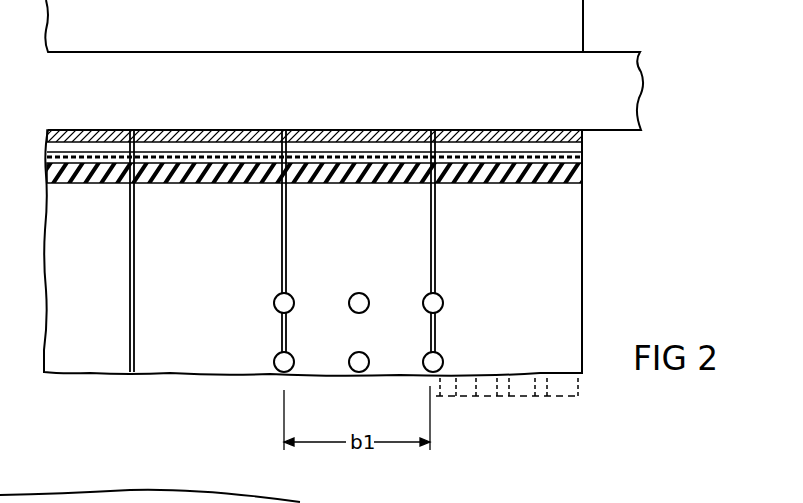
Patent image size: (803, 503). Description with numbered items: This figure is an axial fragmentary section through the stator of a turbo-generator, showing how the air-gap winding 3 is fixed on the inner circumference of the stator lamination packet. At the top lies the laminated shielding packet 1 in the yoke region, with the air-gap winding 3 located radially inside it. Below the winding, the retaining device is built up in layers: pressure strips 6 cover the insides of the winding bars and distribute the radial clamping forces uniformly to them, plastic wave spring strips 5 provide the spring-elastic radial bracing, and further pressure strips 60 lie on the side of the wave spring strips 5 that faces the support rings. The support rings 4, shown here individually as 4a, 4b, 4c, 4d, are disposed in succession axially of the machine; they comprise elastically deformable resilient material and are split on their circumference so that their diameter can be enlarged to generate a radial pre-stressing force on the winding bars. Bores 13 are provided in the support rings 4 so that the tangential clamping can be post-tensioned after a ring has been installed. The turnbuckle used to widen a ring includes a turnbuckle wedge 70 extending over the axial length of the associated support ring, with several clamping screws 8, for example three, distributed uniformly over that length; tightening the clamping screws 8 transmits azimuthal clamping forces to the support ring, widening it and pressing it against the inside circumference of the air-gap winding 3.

The shielding packet 1 is at (557, 20).
The air-gap winding 3 is at (622, 93).
The pressure strips 6 is at (583, 133).
The plastic wave spring strips 5 is at (583, 150).
The further pressure strips 60 is at (583, 168).
The support rings 4 is at (557, 255).
The support ring 4a is at (88, 338).
The support ring 4b is at (211, 338).
The support ring 4c is at (389, 343).
The support ring 4d is at (503, 345).
The bores 13 is at (259, 374).
The clamping screws 8 is at (465, 392).
The turnbuckle wedge 70 is at (563, 392).